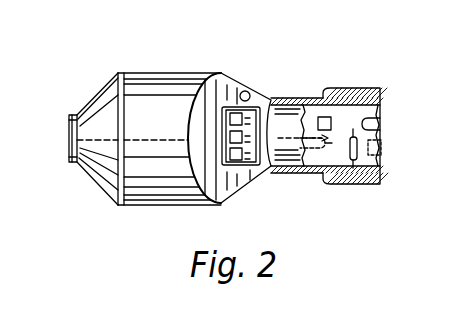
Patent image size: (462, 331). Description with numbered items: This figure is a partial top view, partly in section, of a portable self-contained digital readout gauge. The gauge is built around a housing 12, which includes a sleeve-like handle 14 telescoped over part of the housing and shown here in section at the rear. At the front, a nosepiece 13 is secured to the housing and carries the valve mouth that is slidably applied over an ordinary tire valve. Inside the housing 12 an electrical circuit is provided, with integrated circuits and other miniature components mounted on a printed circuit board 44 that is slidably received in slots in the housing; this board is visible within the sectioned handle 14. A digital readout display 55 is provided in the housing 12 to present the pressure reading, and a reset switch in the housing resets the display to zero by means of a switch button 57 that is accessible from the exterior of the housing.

The housing 12 is at (153, 72).
The nosepiece 13 is at (93, 97).
The sleeve-like handle 14 is at (352, 88).
The printed circuit board 44 is at (370, 110).
The digital readout display 55 is at (252, 116).
The switch button 57 is at (246, 91).